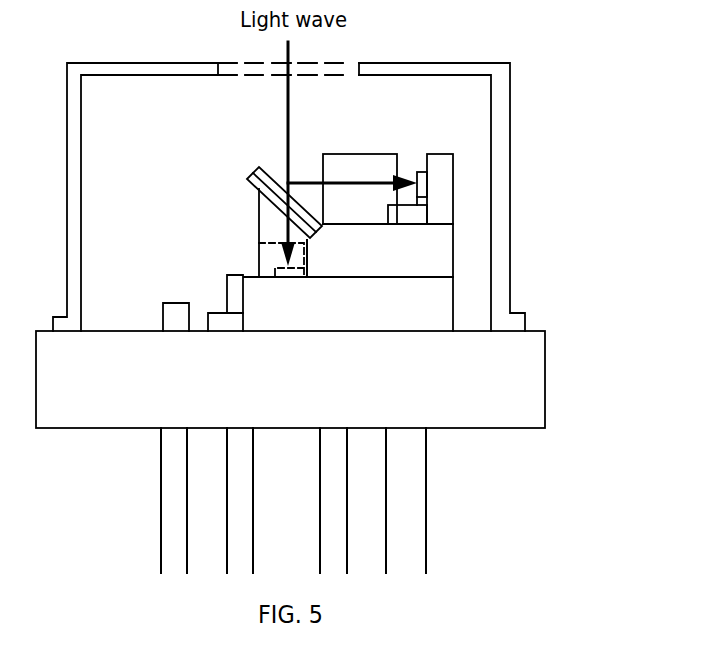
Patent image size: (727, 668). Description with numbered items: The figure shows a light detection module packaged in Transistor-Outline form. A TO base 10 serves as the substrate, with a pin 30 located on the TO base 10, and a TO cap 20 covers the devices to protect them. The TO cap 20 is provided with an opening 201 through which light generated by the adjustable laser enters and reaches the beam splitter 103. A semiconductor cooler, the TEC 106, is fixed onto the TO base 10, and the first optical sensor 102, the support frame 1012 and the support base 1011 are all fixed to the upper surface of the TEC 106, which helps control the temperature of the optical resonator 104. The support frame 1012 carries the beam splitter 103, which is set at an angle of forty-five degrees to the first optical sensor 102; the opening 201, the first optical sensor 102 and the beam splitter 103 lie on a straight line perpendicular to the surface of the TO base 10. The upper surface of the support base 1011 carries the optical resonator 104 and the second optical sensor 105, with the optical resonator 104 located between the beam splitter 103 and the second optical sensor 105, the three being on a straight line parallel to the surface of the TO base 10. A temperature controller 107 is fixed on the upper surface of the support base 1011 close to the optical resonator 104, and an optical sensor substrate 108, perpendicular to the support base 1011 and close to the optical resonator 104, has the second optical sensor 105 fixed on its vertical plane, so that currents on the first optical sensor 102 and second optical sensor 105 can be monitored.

The TO base 10 is at (513, 389).
The TO cap 20 is at (510, 98).
The opening 201 is at (328, 63).
The pin 30 is at (410, 505).
The first optical sensor 102 is at (277, 272).
The beam splitter 103 is at (273, 178).
The optical resonator 104 is at (338, 168).
The second optical sensor 105 is at (422, 183).
The semiconductor cooler 106 is at (427, 308).
The temperature controller 107 is at (402, 218).
The optical sensor substrate 108 is at (444, 177).
The support base 1011 is at (428, 257).
The support frame 1012 is at (268, 217).